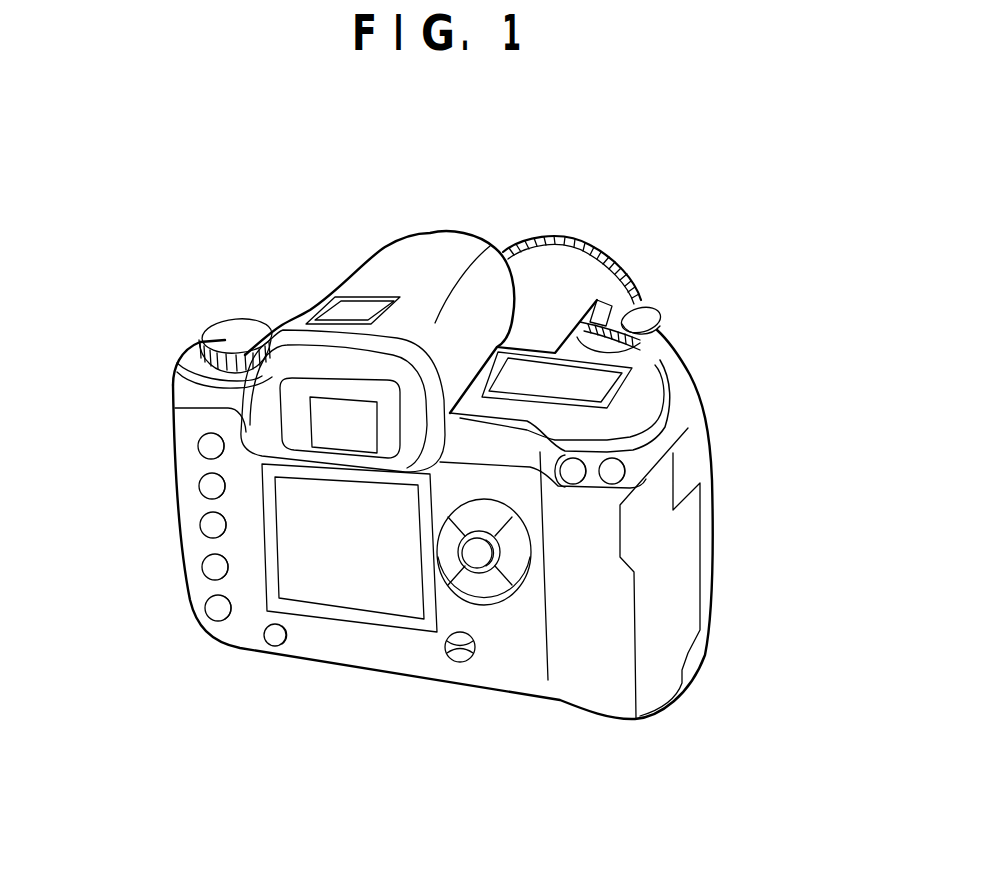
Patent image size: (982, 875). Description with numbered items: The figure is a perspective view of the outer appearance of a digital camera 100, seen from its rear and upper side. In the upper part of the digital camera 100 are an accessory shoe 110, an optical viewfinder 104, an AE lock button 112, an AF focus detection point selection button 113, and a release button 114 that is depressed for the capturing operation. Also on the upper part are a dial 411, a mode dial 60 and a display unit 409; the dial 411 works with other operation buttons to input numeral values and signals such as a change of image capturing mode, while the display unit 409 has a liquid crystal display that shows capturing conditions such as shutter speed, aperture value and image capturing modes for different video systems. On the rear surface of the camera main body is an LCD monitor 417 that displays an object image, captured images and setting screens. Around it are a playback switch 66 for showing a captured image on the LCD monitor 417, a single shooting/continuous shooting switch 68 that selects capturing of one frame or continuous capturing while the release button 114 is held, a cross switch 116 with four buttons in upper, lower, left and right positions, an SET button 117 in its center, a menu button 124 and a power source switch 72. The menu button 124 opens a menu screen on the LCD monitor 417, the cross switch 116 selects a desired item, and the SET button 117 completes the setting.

The digital camera 100 is at (190, 394).
The mode dial 60 is at (233, 333).
The playback switch 66 is at (212, 568).
The single shooting/continuous shooting switch 68 is at (218, 612).
The power source switch 72 is at (458, 662).
The optical viewfinder 104 is at (343, 417).
The accessory shoe 110 is at (359, 307).
The AE lock button 112 is at (573, 472).
The AF focus detection point selection button 113 is at (612, 472).
The release button 114 is at (650, 320).
The cross switch 116 is at (483, 595).
The SET button 117 is at (477, 553).
The menu button 124 is at (207, 445).
The display unit 409 is at (549, 373).
The dial 411 is at (613, 323).
The LCD monitor 417 is at (355, 590).